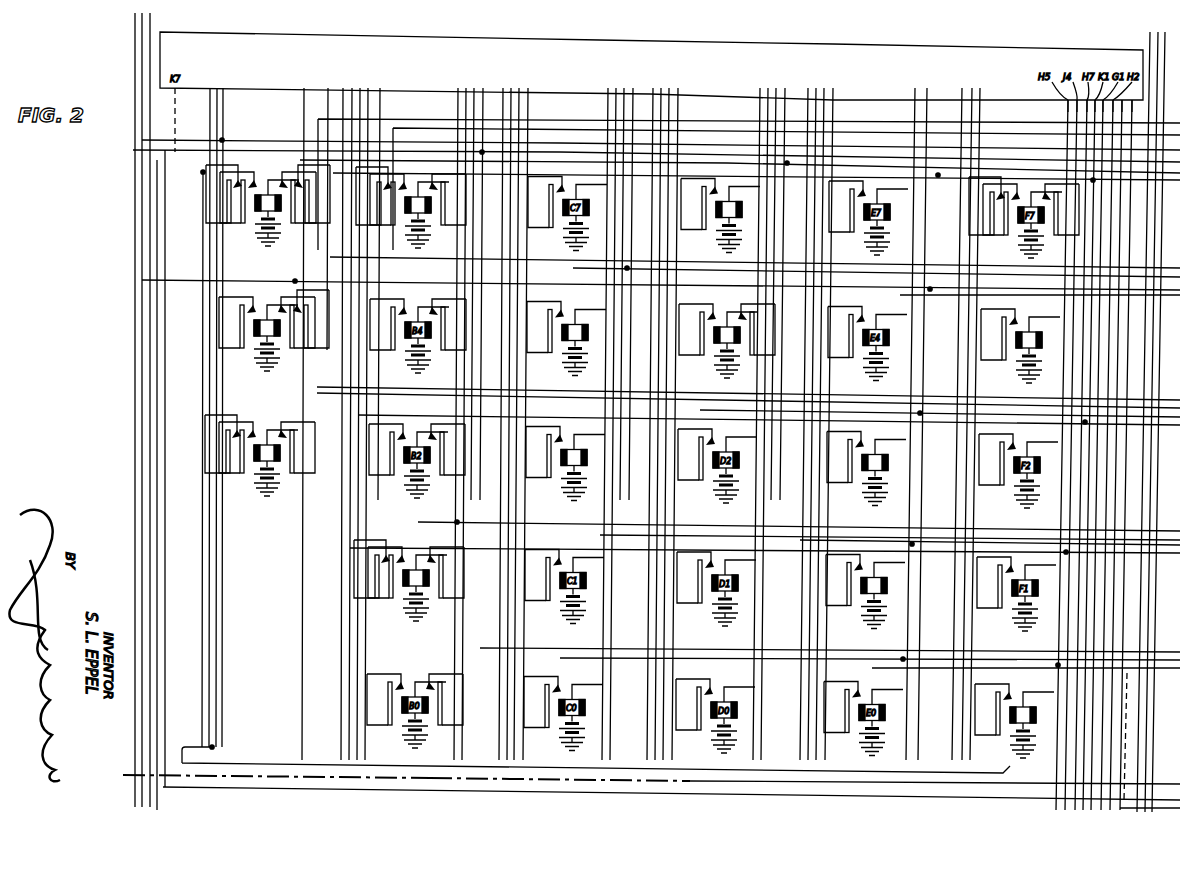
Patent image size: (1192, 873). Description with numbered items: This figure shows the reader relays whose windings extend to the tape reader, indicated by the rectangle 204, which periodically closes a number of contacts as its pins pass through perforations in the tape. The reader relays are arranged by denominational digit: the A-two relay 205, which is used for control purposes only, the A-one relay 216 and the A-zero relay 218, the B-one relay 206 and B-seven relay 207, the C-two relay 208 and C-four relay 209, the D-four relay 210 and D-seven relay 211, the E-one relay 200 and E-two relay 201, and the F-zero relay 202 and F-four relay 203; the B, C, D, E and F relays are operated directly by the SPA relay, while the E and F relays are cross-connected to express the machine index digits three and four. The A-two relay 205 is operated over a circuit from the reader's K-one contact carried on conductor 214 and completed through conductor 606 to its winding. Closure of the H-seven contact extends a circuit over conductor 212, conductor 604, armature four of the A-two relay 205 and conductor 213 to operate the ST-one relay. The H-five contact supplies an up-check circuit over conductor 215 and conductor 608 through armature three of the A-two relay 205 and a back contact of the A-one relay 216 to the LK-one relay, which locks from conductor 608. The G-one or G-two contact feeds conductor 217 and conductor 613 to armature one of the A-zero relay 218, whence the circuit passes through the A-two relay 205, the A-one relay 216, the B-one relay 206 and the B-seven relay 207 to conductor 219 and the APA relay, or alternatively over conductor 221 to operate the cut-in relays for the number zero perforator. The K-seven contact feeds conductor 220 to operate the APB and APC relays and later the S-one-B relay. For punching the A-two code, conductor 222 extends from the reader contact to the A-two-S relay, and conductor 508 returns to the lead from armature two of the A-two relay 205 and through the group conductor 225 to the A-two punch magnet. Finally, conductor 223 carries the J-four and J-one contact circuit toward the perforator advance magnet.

The reader 204 is at (704, 41).
The conductor 222 is at (212, 139).
The conductor 219 is at (229, 156).
The conductor 608 is at (165, 206).
The conductor 613 is at (158, 586).
The A2 relay 205 is at (268, 235).
The B7 relay 207 is at (418, 182).
The conductor 213 is at (698, 122).
The D7 relay 211 is at (725, 192).
The conductor 214 is at (1093, 116).
The A1 relay 216 is at (260, 311).
The C4 relay 209 is at (563, 313).
The D4 relay 210 is at (716, 315).
The F4 relay 203 is at (1021, 320).
The A0 relay 218 is at (260, 431).
The C2 relay 208 is at (563, 437).
The E2 relay 201 is at (862, 452).
The conductor 221 is at (205, 441).
The B1 relay 206 is at (410, 560).
The E1 relay 200 is at (862, 575).
The conductor 212 is at (1106, 670).
The F0 relay 202 is at (1027, 720).
The conductor 604 is at (1124, 708).
The conductor 215 is at (1094, 733).
The conductor 223 is at (1098, 752).
The conductor 508 is at (1050, 770).
The conductor 217 is at (1118, 800).
The conductor 606 is at (1135, 810).
The conductor 220 is at (204, 789).
The group conductor 225 is at (450, 792).